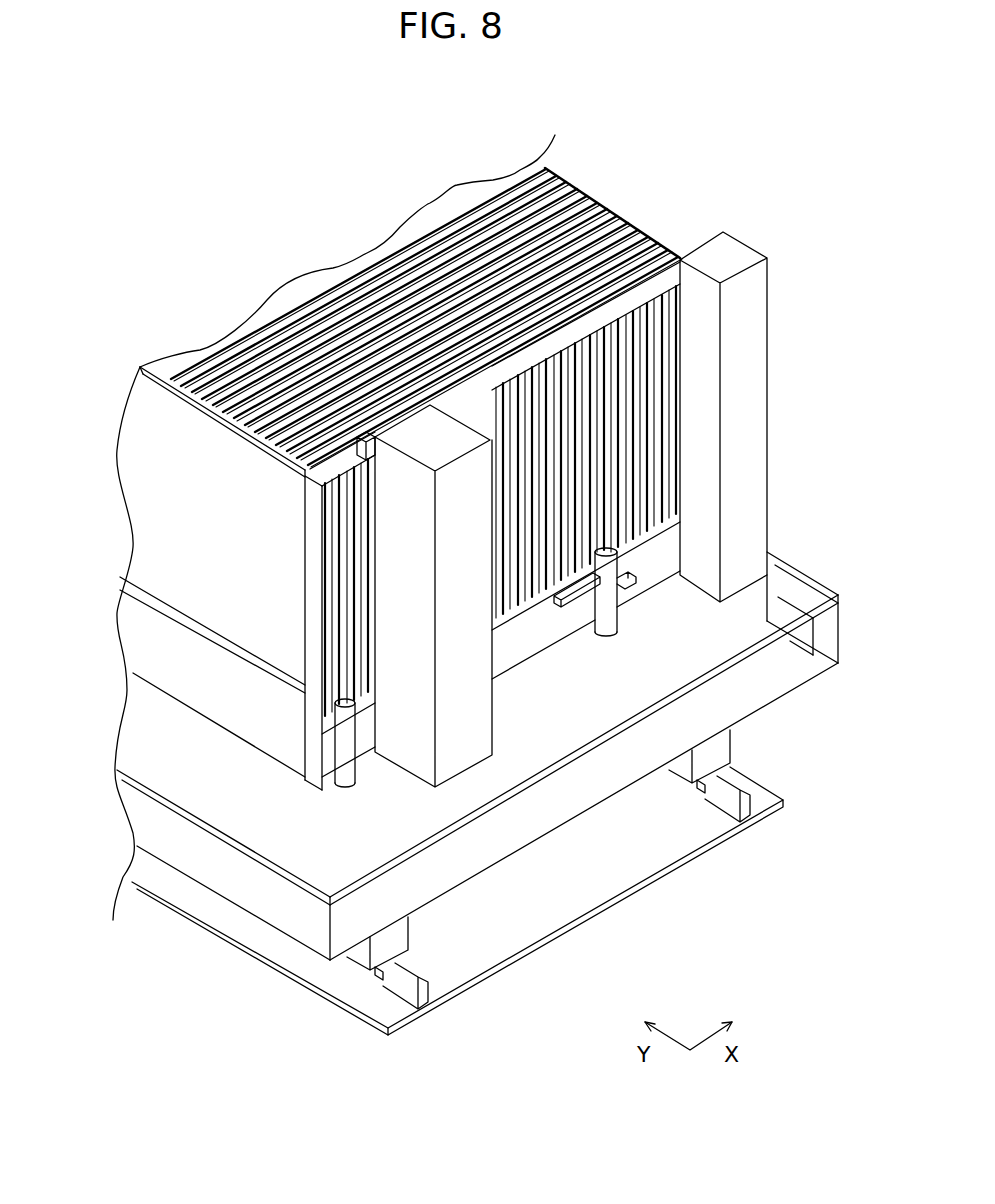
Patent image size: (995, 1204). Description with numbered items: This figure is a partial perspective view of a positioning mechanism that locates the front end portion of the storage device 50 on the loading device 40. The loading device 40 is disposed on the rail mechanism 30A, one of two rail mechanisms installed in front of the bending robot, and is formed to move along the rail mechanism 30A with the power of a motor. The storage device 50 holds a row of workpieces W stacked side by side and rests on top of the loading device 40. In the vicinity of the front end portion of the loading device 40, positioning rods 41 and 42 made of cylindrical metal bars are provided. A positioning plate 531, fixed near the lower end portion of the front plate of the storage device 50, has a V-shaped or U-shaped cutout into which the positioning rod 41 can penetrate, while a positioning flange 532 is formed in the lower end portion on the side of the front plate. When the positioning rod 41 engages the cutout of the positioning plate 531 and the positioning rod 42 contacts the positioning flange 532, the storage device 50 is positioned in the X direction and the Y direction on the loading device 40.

The workpiece W is at (313, 320).
The storage device 50 is at (190, 678).
The positioning flange 532 is at (322, 756).
The positioning rod 42 is at (348, 778).
The positioning rod 41 is at (618, 617).
The positioning plate 531 is at (583, 594).
The loading device 40 is at (798, 583).
The rail mechanism 30A is at (723, 797).